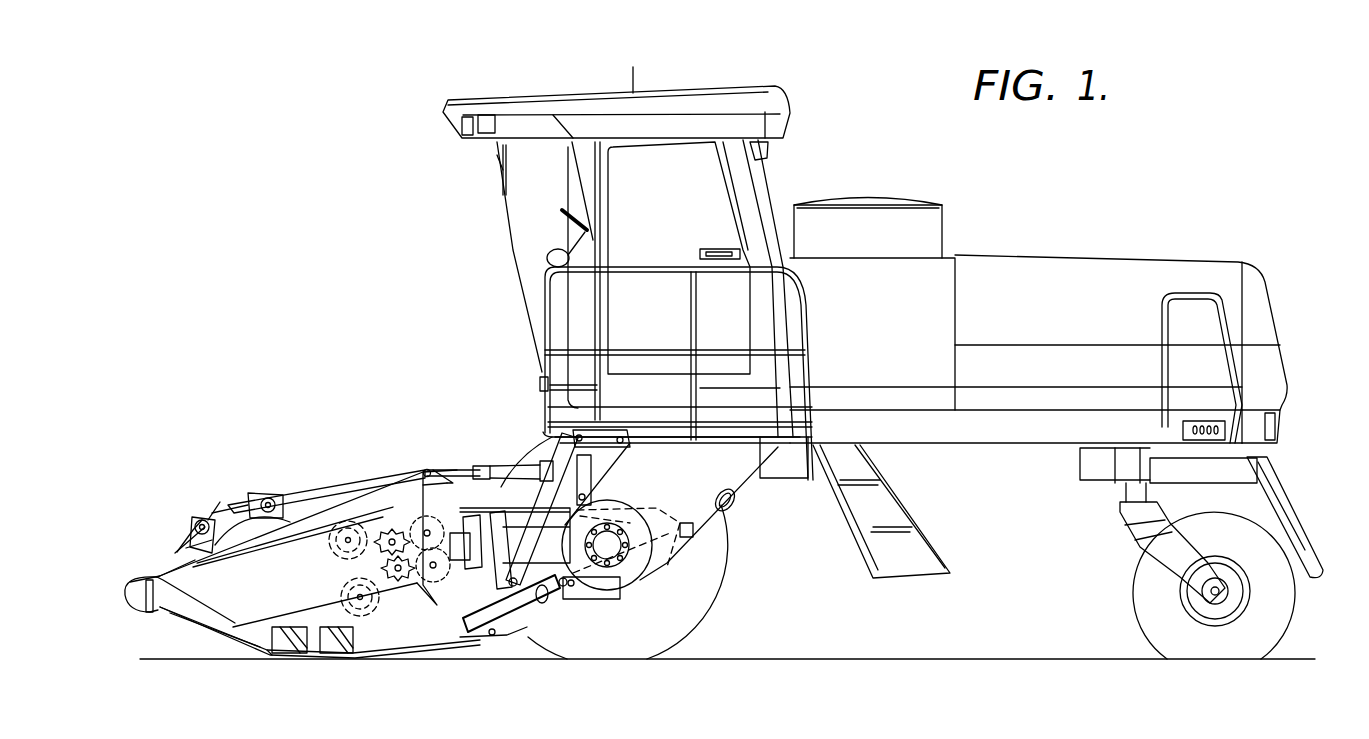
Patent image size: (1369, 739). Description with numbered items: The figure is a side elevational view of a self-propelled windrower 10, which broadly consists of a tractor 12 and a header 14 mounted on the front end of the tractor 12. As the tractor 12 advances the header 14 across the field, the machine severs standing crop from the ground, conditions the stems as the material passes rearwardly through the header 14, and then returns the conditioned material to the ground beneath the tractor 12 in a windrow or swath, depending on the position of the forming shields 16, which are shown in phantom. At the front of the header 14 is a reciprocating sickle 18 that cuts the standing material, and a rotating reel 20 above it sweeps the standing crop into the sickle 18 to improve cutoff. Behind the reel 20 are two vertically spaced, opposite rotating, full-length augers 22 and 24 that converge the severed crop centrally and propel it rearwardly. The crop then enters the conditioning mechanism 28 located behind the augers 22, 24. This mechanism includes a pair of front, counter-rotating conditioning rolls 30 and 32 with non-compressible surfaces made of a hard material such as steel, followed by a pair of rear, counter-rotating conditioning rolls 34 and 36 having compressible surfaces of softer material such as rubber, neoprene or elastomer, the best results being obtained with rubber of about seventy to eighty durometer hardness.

The self-propelled windrower 10 is at (775, 61).
The tractor 12 is at (1100, 257).
The header 14 is at (295, 482).
The forming shields 16 is at (648, 560).
The reciprocating sickle 18 is at (297, 658).
The rotating reel 20 is at (213, 512).
The auger 22 is at (330, 548).
The auger 24 is at (342, 597).
The crop conditioning mechanism 28 is at (403, 516).
The front conditioning roll 30 is at (380, 521).
The front conditioning roll 32 is at (373, 568).
The rear conditioning roll 34 is at (460, 498).
The rear conditioning roll 36 is at (470, 612).